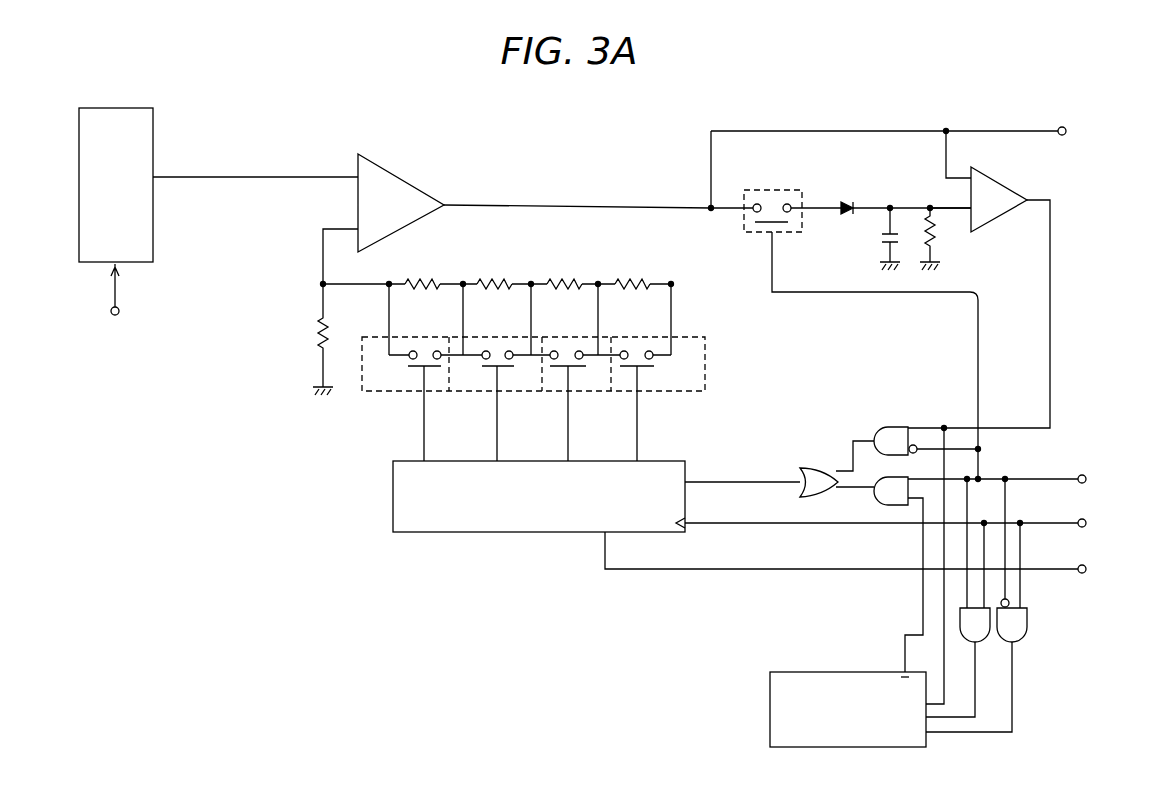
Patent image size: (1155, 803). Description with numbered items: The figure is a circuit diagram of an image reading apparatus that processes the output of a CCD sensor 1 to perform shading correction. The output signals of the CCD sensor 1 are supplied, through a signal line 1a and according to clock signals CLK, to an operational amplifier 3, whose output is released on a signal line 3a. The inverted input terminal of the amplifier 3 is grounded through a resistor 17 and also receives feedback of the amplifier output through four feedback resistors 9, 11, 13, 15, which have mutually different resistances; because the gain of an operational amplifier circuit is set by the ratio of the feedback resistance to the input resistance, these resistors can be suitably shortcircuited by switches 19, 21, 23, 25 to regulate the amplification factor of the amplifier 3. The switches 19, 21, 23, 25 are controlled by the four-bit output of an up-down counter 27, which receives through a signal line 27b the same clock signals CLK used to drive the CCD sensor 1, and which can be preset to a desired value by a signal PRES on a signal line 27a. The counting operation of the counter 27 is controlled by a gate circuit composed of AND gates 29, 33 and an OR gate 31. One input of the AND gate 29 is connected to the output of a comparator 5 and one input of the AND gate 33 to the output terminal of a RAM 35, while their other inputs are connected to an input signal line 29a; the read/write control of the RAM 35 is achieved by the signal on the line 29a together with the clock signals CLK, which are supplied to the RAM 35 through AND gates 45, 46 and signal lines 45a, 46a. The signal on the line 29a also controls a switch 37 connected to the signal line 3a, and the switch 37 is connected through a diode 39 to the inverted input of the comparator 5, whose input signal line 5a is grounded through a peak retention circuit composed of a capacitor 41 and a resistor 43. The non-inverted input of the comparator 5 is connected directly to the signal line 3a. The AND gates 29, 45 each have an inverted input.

The CCD sensor 1 is at (118, 108).
The signal line 1a is at (239, 177).
The operational amplifier 3 is at (404, 178).
The signal line 3a is at (523, 205).
The comparator 5 is at (1000, 182).
The input signal line 5a is at (957, 205).
The feedback resistor 9 is at (422, 289).
The feedback resistor 11 is at (494, 289).
The feedback resistor 13 is at (565, 289).
The feedback resistor 15 is at (632, 289).
The resistor 17 is at (333, 342).
The switch 19 is at (382, 391).
The switch 21 is at (478, 391).
The switch 23 is at (585, 391).
The switch 25 is at (672, 391).
The up-down counter 27 is at (393, 481).
The signal line 27a is at (1052, 569).
The signal line 27b is at (1052, 523).
The AND gate 29 is at (893, 427).
The input signal line 29a is at (1052, 479).
The OR gate 31 is at (821, 468).
The AND gate 33 is at (872, 497).
The RAM 35 is at (770, 695).
The switch 37 is at (772, 190).
The diode 39 is at (847, 200).
The capacitor 41 is at (877, 238).
The resistor 43 is at (942, 238).
The AND gate 45 is at (1030, 620).
The signal line 45a is at (1012, 693).
The AND gate 46 is at (960, 622).
The signal line 46a is at (975, 660).